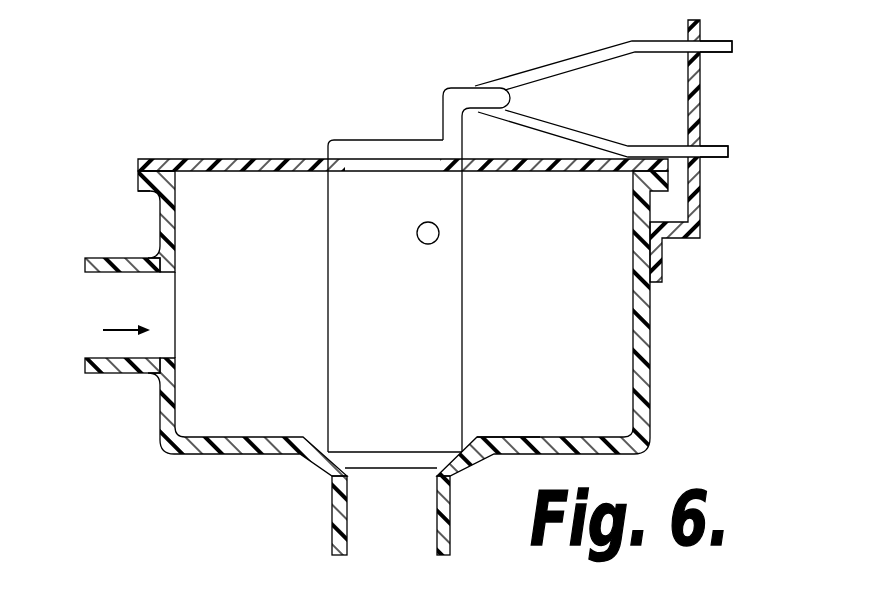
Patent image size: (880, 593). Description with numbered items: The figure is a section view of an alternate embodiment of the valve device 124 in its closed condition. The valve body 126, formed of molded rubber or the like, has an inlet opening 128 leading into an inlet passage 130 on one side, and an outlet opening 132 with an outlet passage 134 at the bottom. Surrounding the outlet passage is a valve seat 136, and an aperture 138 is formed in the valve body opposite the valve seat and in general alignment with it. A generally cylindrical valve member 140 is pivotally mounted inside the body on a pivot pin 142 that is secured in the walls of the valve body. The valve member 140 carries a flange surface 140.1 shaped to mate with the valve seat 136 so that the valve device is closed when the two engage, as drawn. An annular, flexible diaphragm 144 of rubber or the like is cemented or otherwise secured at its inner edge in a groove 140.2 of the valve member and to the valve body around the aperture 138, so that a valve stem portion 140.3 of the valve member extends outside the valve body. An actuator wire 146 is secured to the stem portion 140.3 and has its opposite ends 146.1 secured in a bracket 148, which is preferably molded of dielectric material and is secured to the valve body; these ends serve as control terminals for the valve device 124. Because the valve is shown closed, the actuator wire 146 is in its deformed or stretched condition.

The valve device 124 is at (714, 271).
The valve body 126 is at (652, 390).
The inlet opening 128 is at (90, 323).
The inlet passage 130 is at (155, 304).
The outlet opening 132 is at (412, 548).
The outlet passage 134 is at (412, 519).
The valve seat 136 is at (464, 438).
The aperture 138 is at (180, 183).
The valve member 140 is at (468, 304).
The flange surface 140.1 is at (346, 454).
The groove 140.2 is at (423, 176).
The valve stem portion 140.3 is at (443, 111).
The pivot pin 142 is at (440, 233).
The flexible diaphragm 144 is at (275, 168).
The actuator wire 146 is at (585, 38).
The wire ends 146.1 is at (722, 43).
The bracket 148 is at (700, 104).